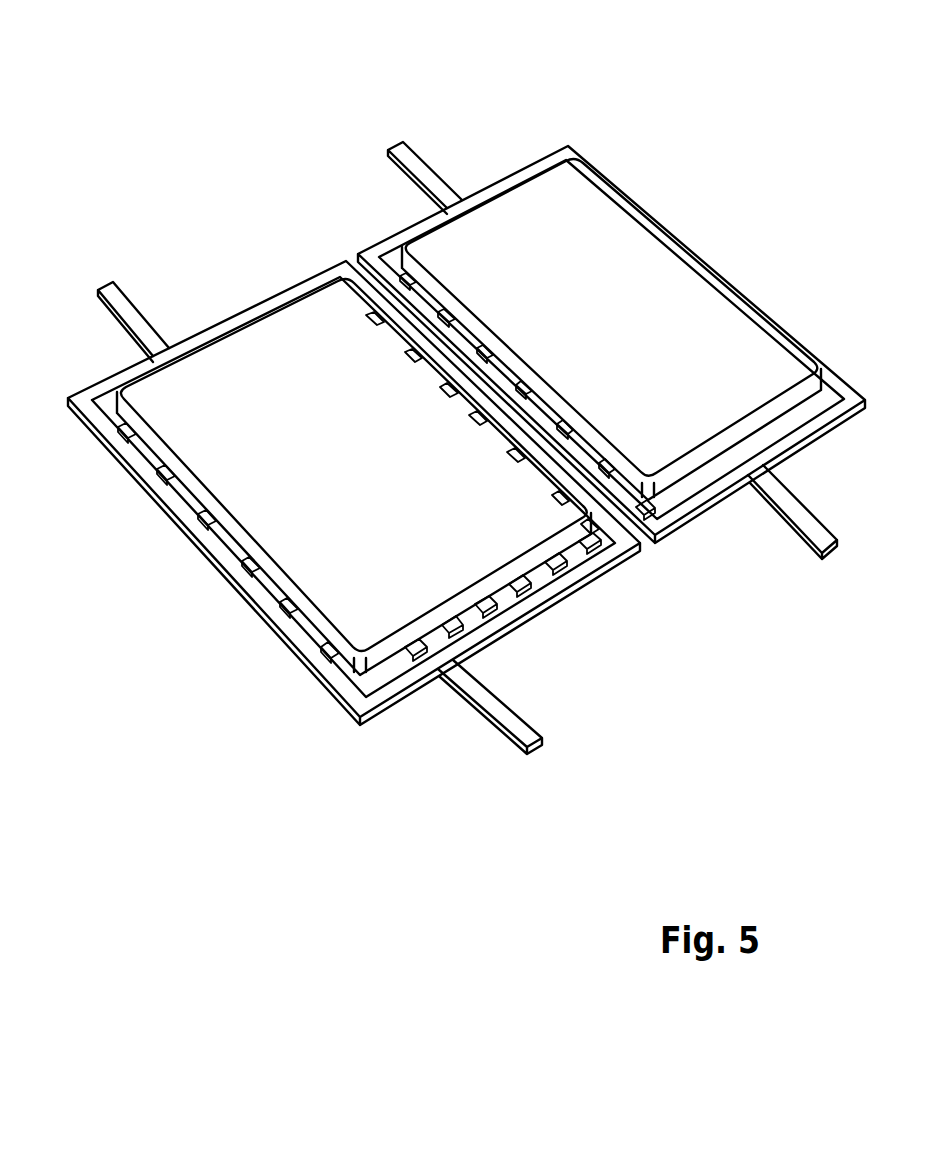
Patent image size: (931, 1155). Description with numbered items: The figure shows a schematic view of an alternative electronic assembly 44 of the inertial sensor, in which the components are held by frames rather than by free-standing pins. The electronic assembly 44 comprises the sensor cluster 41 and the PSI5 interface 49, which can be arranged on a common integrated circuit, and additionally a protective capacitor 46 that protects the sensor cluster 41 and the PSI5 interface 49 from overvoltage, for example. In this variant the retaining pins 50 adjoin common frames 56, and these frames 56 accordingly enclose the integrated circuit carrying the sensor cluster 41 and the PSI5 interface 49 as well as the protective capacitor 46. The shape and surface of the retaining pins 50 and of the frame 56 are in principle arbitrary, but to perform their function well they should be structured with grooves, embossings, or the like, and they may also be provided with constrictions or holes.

The electronic assembly 44 is at (233, 110).
The common frame 56 is at (566, 145).
The retaining pin 50 is at (417, 168).
The sensor cluster 41 is at (354, 457).
The PSI5 interface 49 is at (257, 337).
The protective capacitor 46 is at (652, 258).